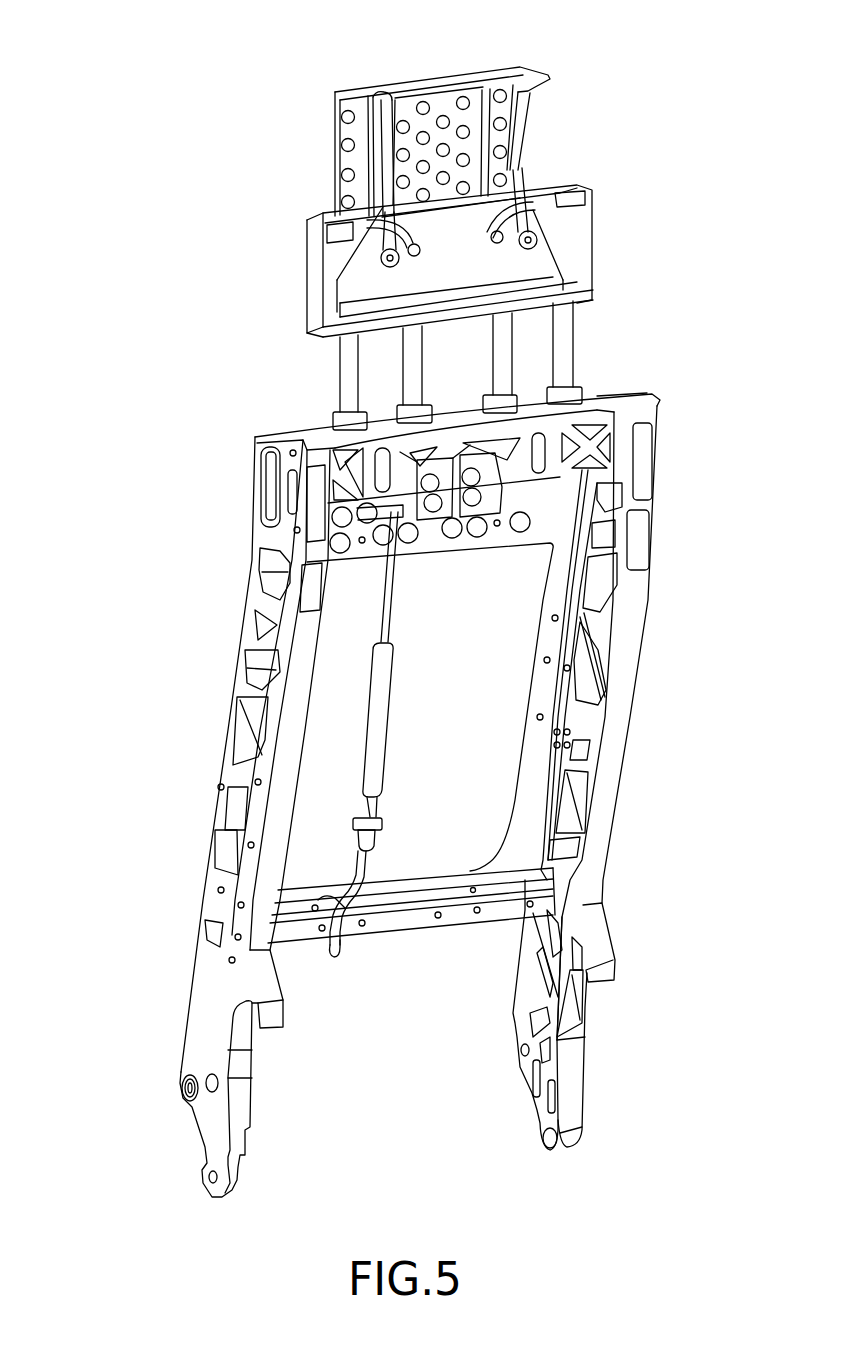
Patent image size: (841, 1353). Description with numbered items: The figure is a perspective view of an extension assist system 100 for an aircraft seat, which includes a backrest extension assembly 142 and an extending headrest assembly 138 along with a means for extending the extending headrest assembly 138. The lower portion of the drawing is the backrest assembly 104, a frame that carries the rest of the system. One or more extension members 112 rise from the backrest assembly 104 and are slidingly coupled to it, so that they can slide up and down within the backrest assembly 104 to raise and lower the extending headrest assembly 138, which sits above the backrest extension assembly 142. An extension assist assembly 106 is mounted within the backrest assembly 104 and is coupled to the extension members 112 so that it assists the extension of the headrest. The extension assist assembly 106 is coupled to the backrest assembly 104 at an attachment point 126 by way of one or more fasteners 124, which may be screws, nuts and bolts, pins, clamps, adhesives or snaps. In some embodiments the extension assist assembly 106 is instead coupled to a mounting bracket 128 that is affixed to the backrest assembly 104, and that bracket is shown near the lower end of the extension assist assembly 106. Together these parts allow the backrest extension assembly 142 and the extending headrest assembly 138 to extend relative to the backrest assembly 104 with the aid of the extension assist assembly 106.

The extension assist system 100 is at (191, 46).
The backrest assembly 104 is at (660, 714).
The extension assist assembly 106 is at (375, 728).
The extension members 112 is at (347, 382).
The fasteners 124 is at (357, 833).
The attachment point 126 is at (363, 820).
The mounting bracket 128 is at (340, 942).
The extending headrest assembly 138 is at (330, 156).
The backrest extension assembly 142 is at (318, 277).